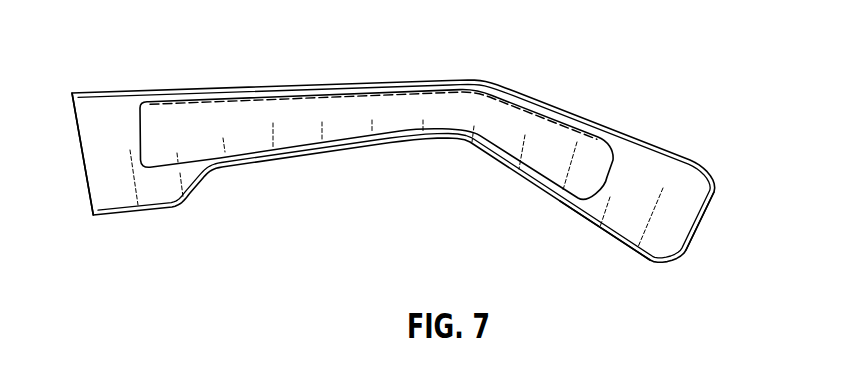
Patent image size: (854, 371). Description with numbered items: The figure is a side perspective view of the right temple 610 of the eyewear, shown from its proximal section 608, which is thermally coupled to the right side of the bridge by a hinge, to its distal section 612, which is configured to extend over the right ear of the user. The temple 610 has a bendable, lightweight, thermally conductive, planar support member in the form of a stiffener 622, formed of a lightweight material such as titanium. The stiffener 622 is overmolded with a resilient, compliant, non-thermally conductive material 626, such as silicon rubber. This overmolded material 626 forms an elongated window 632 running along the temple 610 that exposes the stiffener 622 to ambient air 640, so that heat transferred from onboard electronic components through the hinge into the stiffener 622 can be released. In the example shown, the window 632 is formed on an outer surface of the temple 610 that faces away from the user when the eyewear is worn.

The proximal section 608 is at (100, 92).
The right temple 610 is at (303, 84).
The distal section 612 is at (705, 217).
The stiffener 622 is at (352, 105).
The overmolded material 626 is at (620, 227).
The window 632 is at (442, 90).
The ambient air 640 is at (340, 200).